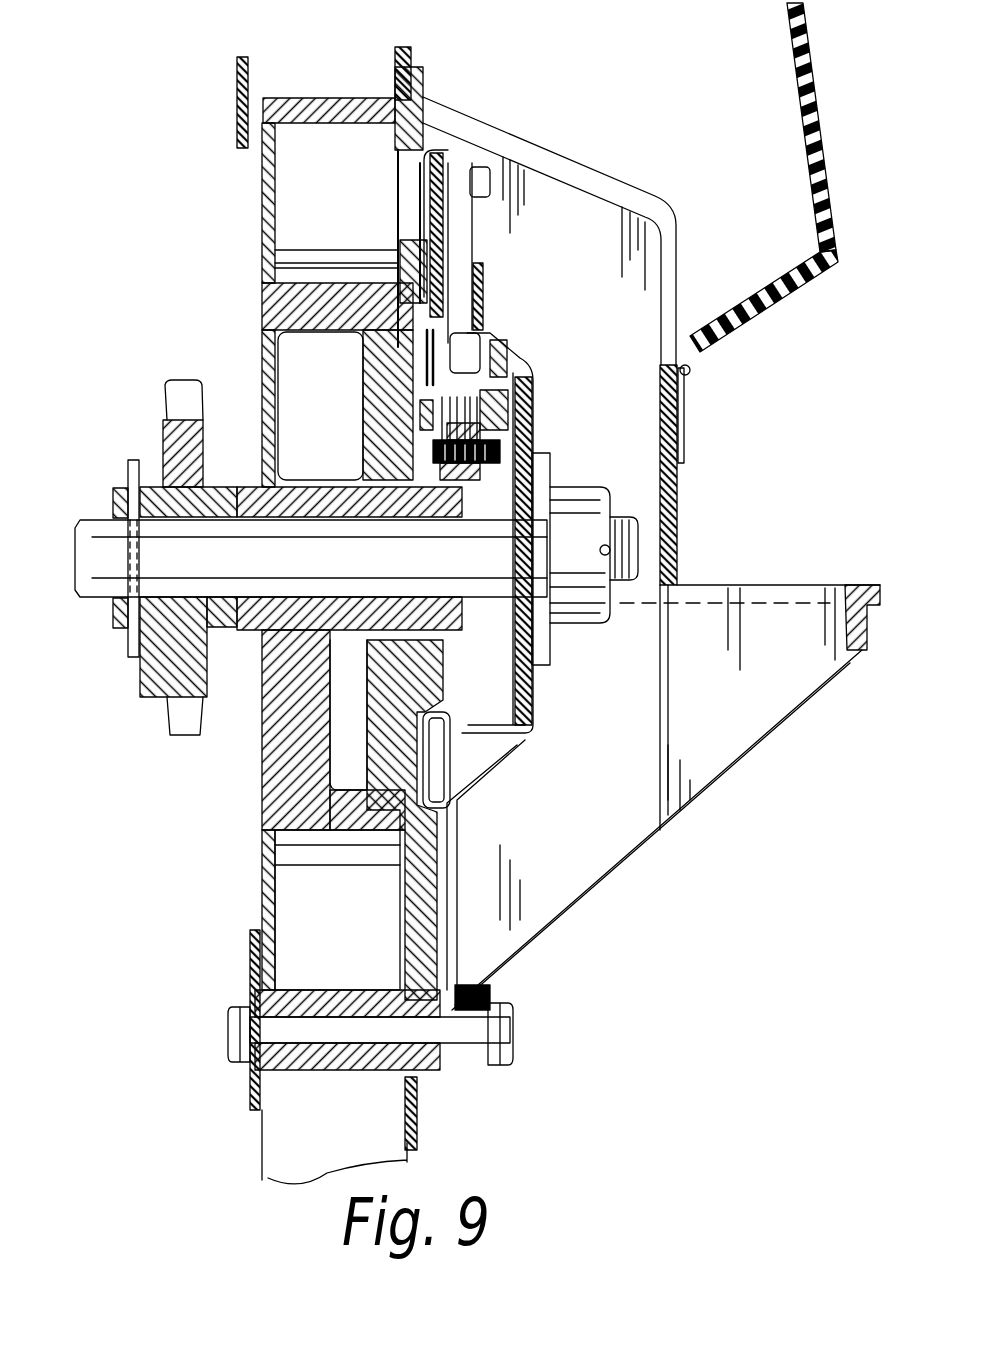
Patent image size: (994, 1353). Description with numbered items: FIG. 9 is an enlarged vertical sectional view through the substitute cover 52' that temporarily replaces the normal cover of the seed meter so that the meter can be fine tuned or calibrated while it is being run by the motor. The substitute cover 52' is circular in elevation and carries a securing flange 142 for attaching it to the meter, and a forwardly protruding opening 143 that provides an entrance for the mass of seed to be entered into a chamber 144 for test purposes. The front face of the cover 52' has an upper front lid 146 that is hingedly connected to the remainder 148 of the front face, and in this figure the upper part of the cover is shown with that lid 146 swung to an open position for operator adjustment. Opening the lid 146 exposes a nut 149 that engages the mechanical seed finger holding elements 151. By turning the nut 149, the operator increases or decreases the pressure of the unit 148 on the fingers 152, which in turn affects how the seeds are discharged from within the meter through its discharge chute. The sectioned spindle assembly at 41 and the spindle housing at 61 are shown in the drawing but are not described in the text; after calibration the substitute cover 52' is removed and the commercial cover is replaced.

The spindle assembly housing 41 is at (152, 88).
The upper front lid 146 is at (800, 86).
The fingers 152 is at (463, 228).
The mechanical seed finger holding elements 151 is at (552, 334).
The nut 149 is at (680, 440).
The remainder of the front face 148 is at (680, 470).
The forwardly protruding opening 143 is at (770, 562).
The chamber 144 is at (605, 787).
The substitute cover 52' is at (657, 830).
The securing flange 142 is at (488, 1050).
The spindle housing 61 is at (270, 1142).